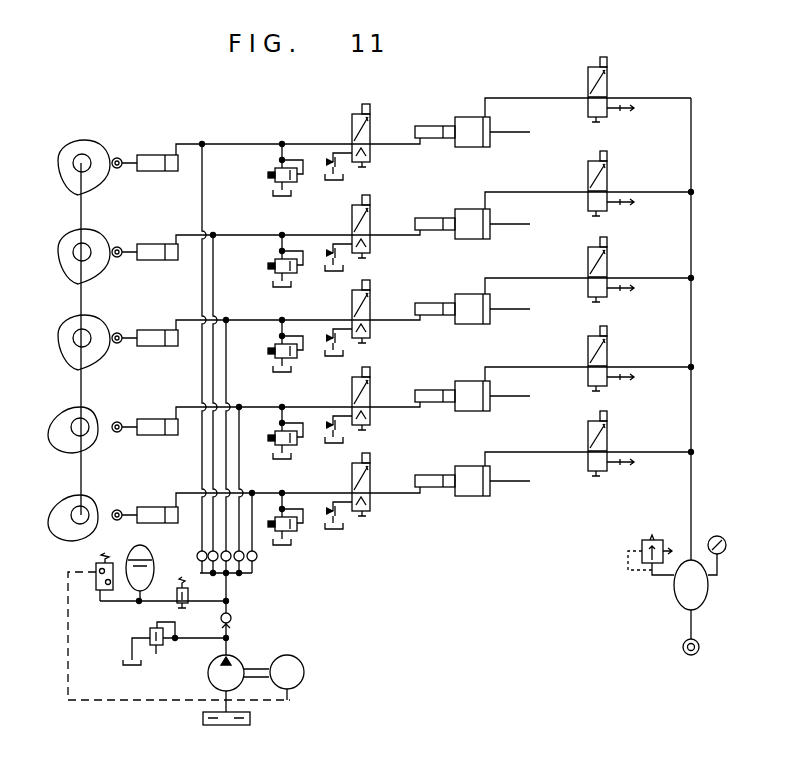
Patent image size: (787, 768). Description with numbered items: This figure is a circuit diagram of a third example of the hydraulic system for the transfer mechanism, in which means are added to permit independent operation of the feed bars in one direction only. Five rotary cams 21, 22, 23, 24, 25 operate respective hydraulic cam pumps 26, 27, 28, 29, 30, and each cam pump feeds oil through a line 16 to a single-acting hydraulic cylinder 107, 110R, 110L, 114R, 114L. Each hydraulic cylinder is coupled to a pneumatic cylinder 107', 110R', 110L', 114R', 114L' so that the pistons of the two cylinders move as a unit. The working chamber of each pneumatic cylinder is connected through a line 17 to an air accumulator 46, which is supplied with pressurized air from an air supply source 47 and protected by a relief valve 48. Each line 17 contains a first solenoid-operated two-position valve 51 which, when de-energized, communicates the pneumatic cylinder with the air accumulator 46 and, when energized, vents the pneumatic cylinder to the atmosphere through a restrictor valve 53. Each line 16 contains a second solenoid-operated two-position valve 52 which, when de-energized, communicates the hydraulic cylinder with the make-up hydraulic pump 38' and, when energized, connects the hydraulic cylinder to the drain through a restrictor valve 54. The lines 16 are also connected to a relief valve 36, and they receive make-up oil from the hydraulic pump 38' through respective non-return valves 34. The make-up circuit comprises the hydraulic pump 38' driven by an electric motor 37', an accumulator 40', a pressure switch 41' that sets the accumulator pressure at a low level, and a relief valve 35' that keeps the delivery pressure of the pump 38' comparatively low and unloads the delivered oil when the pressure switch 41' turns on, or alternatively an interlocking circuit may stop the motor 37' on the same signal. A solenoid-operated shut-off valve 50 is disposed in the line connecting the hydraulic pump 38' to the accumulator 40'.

The line 16 is at (323, 142).
The line 17 is at (572, 100).
The rotary cam 21 is at (68, 501).
The rotary cam 22 is at (68, 413).
The rotary cam 23 is at (68, 324).
The rotary cam 24 is at (68, 238).
The rotary cam 25 is at (68, 149).
The hydraulic cam pump 26 is at (156, 506).
The hydraulic cam pump 27 is at (156, 418).
The hydraulic cam pump 28 is at (156, 329).
The hydraulic cam pump 29 is at (156, 243).
The hydraulic cam pump 30 is at (156, 154).
The non-return valve 34 is at (257, 557).
The relief valve 35' is at (170, 637).
The relief valve 36 is at (270, 344).
The electric motor 37' is at (312, 674).
The hydraulic pump 38' is at (217, 690).
The accumulator 40' is at (160, 563).
The pressure switch 41' is at (91, 568).
The air accumulator 46 is at (674, 594).
The air supply source 47 is at (683, 647).
The relief valve 48 is at (645, 540).
The solenoid-operated shut-off valve 50 is at (186, 606).
The first solenoid-operated two-position valve 51 is at (619, 265).
The second solenoid-operated two-position valve 52 is at (380, 310).
The restrictor valve 53 is at (635, 301).
The restrictor valve 54 is at (329, 359).
The hydraulic cylinder 107 is at (433, 455).
The pneumatic cylinder 107' is at (492, 460).
The hydraulic cylinder 110L is at (440, 282).
The pneumatic cylinder 110L' is at (493, 287).
The hydraulic cylinder 110R is at (441, 370).
The pneumatic cylinder 110R' is at (494, 375).
The hydraulic cylinder 114L is at (440, 104).
The pneumatic cylinder 114L' is at (493, 108).
The hydraulic cylinder 114R is at (441, 197).
The pneumatic cylinder 114R' is at (494, 201).